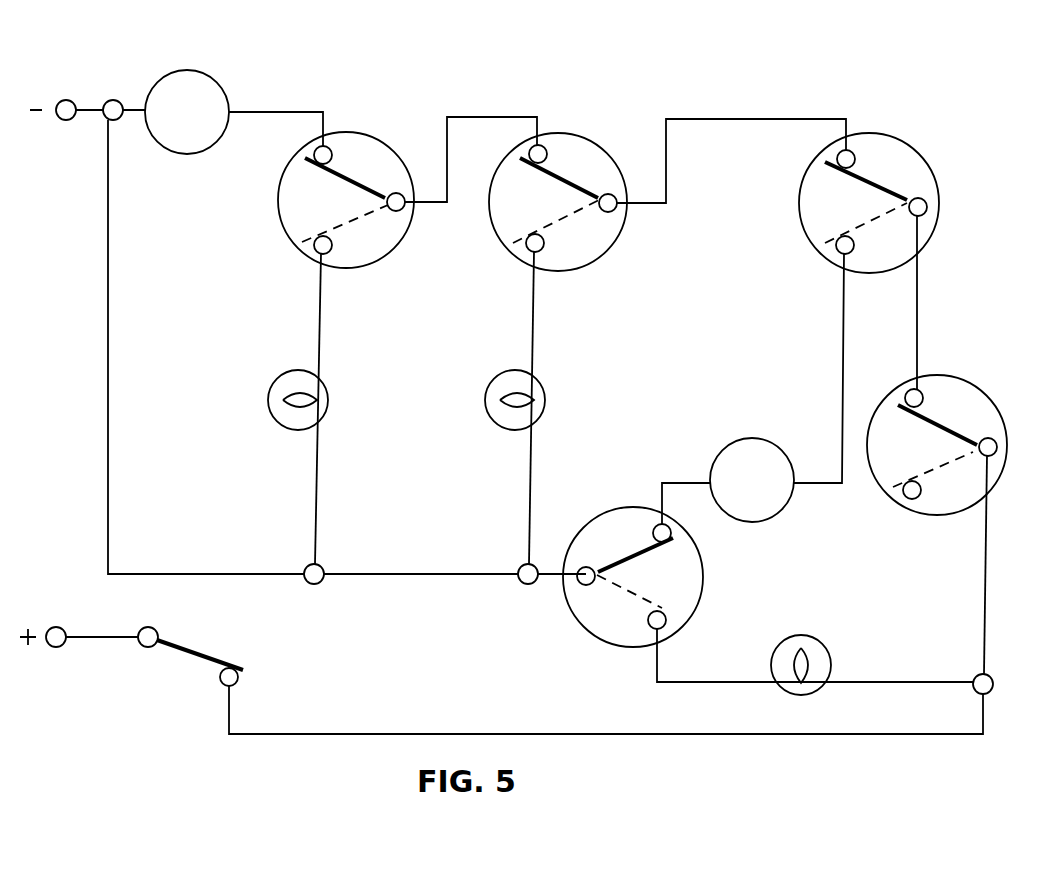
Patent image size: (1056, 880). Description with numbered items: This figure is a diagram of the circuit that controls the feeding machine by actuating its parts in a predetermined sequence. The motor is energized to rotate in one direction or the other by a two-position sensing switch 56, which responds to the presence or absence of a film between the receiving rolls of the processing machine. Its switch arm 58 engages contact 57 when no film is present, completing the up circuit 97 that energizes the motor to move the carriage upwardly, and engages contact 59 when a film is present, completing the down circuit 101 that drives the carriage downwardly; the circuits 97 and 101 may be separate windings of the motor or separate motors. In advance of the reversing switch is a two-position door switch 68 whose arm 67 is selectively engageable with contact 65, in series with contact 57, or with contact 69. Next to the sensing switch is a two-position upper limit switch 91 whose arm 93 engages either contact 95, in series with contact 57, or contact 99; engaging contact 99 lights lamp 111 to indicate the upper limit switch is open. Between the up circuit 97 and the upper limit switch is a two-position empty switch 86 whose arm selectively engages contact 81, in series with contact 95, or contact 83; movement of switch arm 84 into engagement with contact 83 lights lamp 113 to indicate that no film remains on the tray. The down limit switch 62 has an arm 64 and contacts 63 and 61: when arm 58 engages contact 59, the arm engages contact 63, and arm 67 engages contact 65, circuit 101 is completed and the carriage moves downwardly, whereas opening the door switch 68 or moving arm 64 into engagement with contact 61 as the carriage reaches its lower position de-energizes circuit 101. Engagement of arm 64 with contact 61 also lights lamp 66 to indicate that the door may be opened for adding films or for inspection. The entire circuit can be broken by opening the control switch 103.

The circuit 97 is at (190, 72).
The empty switch 86 is at (362, 148).
The contact 81 is at (325, 148).
The contact 83 is at (325, 255).
The switch arm 84 is at (372, 188).
The lamp 113 is at (322, 392).
The upper limit switch 91 is at (581, 163).
The switch arm 93 is at (590, 190).
The contact 95 is at (541, 147).
The contact 99 is at (538, 252).
The lamp 111 is at (540, 392).
The sensing switch 56 is at (910, 180).
The contact 57 is at (848, 151).
The switch arm 58 is at (870, 182).
The contact 59 is at (847, 254).
The circuit 101 is at (785, 509).
The door switch 68 is at (962, 405).
The contact 65 is at (907, 392).
The switch arm 67 is at (965, 440).
The contact 69 is at (907, 498).
The down limit switch 62 is at (605, 548).
The contact 63 is at (668, 528).
The switch arm 64 is at (647, 557).
The contact 61 is at (665, 628).
The lamp 66 is at (820, 648).
The control switch 103 is at (203, 669).